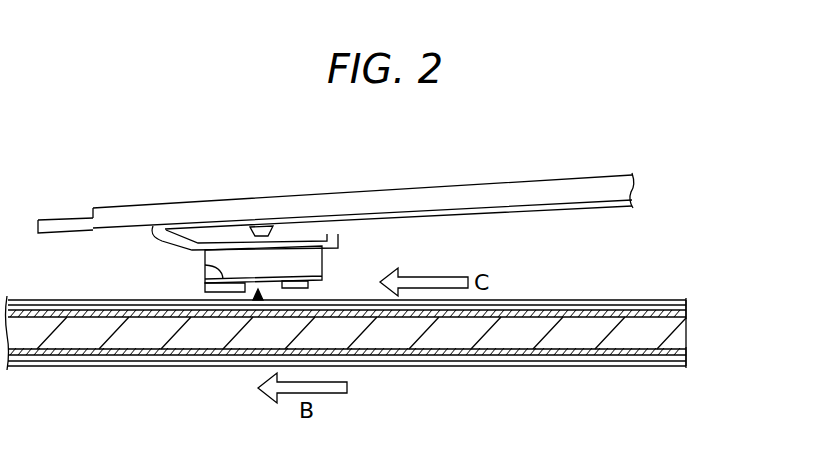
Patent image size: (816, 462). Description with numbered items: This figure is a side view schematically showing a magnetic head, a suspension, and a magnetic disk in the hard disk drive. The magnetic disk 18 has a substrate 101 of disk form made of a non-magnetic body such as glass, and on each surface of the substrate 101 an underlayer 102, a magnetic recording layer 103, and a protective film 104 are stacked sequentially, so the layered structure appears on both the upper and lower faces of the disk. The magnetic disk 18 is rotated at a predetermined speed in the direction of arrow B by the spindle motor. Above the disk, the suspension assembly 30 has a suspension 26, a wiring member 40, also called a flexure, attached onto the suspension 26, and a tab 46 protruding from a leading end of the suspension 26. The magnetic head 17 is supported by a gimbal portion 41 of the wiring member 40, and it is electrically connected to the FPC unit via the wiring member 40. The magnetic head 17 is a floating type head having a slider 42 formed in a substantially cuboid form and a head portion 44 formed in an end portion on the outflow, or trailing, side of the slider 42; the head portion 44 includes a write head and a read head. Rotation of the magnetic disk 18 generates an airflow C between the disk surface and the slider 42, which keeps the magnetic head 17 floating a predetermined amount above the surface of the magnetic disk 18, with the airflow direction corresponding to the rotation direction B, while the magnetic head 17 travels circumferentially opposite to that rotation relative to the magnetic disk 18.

The magnetic head 17 is at (258, 300).
The magnetic disk 18 is at (385, 321).
The suspension 26 is at (512, 190).
The suspension assembly 30 is at (336, 196).
The wiring member 40 is at (577, 210).
The gimbal portion 41 is at (325, 234).
The slider 42 is at (237, 257).
The head portion 44 is at (205, 265).
The tab 46 is at (57, 222).
The substrate 101 is at (577, 340).
The underlayer 102 is at (672, 316).
The magnetic recording layer 103 is at (617, 303).
The protective film 104 is at (648, 290).